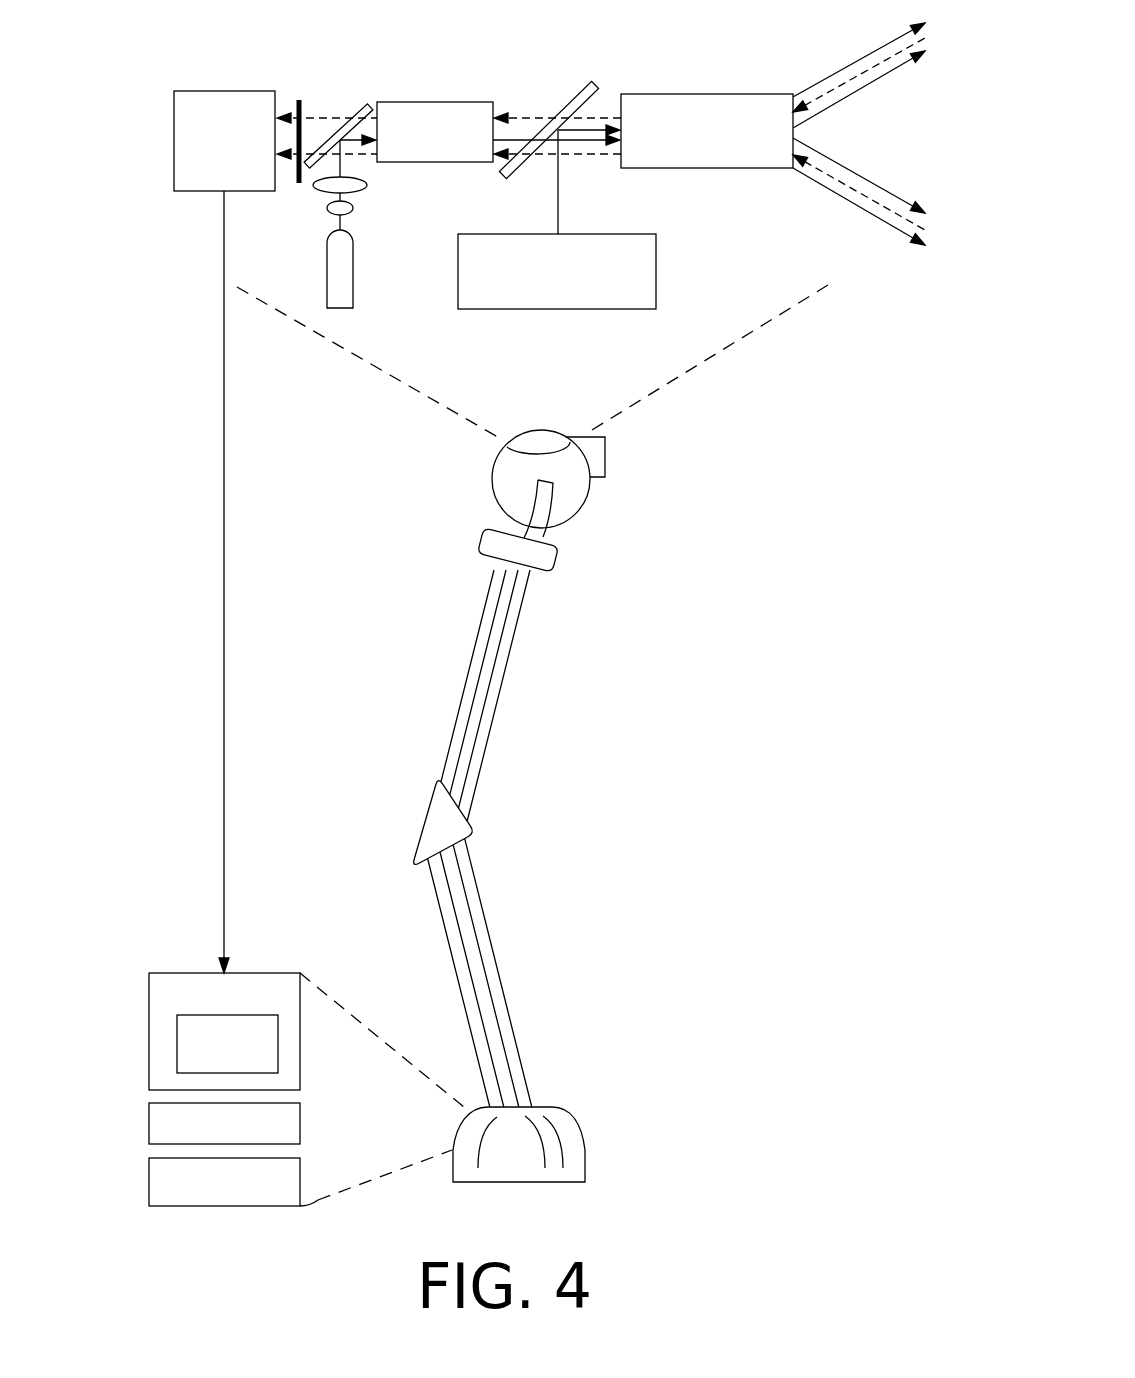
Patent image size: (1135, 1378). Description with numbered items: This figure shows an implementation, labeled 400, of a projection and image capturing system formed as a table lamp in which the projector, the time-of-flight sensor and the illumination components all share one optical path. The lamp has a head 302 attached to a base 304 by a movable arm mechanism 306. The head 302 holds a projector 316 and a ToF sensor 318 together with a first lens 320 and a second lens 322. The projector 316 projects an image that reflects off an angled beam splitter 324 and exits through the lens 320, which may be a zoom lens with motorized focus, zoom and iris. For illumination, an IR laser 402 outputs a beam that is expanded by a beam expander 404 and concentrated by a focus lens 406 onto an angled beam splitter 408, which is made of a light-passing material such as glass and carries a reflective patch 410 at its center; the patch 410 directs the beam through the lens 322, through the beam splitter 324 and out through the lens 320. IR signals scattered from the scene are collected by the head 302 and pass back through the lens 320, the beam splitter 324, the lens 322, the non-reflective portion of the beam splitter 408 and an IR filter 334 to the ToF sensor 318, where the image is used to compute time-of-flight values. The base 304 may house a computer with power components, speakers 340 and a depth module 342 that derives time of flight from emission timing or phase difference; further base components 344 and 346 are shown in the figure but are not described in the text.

The head 302 is at (590, 507).
The base 304 is at (585, 1145).
The arm mechanism 306 is at (420, 798).
The projector 316 is at (557, 219).
The ToF sensor 318 is at (224, 141).
The first lens 320 is at (707, 131).
The second lens 322 is at (435, 132).
The beam splitter 324 is at (575, 90).
The IR filter 334 is at (297, 100).
The speakers 340 is at (188, 1031).
The depth module 342 is at (148, 1124).
The speaker(s) 344 is at (148, 1176).
The depth module 346 is at (177, 1042).
The system 400 is at (755, 679).
The IR laser 402 is at (353, 308).
The beam expander 404 is at (353, 208).
The focus lens 406 is at (365, 184).
The angled beam splitter 408 is at (315, 89).
The reflective patch 410 is at (365, 100).